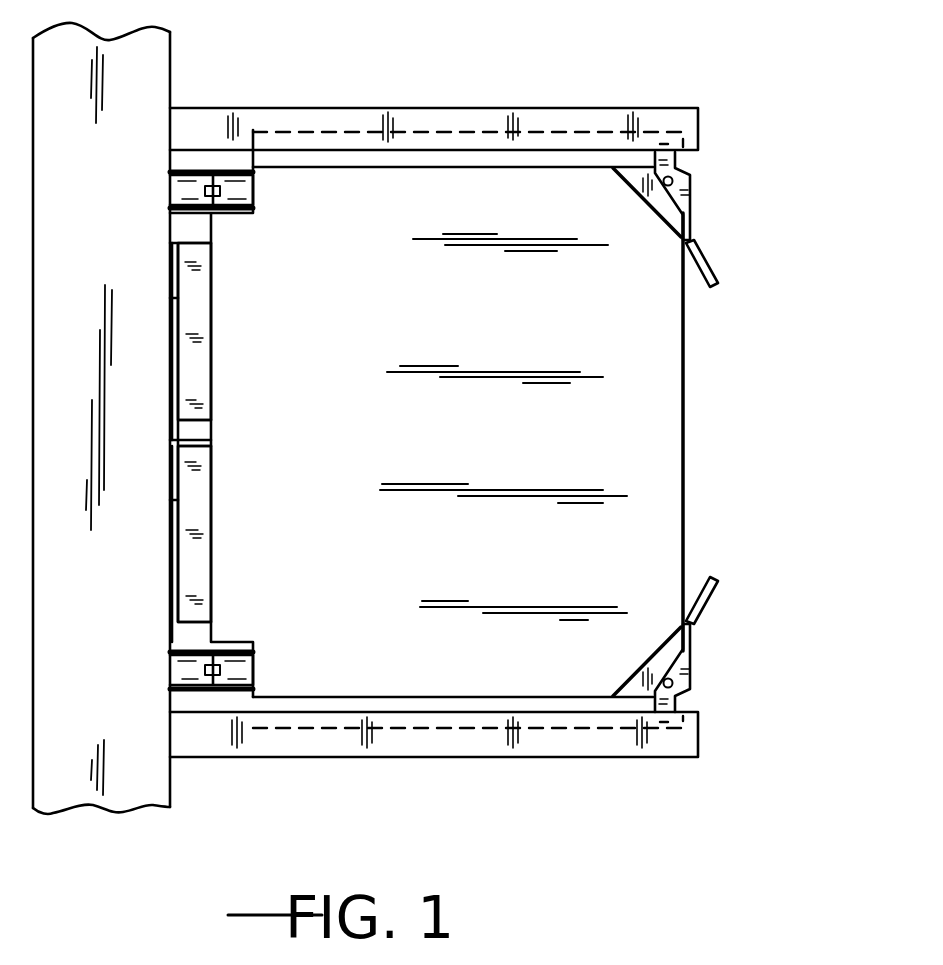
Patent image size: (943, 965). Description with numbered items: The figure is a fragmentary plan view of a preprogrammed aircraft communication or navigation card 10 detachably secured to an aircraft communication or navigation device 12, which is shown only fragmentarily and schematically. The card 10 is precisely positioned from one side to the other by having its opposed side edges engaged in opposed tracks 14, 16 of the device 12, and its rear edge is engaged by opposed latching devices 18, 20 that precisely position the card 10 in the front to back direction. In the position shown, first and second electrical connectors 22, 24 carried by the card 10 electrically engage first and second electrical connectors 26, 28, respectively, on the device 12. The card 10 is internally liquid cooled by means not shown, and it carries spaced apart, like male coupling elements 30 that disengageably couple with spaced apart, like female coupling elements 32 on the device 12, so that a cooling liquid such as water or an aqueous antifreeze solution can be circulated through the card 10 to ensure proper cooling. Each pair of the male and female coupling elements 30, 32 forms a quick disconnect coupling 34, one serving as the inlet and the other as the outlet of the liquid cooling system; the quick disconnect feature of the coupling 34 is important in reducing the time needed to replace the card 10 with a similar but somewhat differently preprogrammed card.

The preprogrammed communication or navigation card 10 is at (655, 408).
The aircraft communication or navigation device 12 is at (145, 63).
The track 14 is at (565, 123).
The track 16 is at (598, 740).
The latching device 18 is at (697, 242).
The latching device 20 is at (710, 603).
The first electrical connector 22 is at (200, 366).
The second electrical connector 24 is at (197, 565).
The first electrical connector 26 is at (185, 298).
The second electrical connector 28 is at (185, 497).
The male coupling element 30 is at (240, 190).
The female coupling element 32 is at (185, 190).
The quick disconnect coupling 34 is at (185, 153).